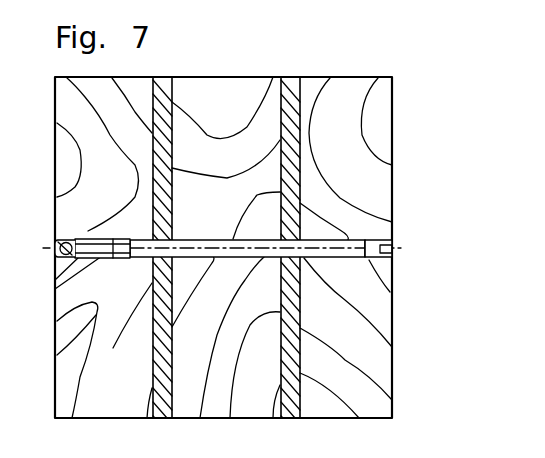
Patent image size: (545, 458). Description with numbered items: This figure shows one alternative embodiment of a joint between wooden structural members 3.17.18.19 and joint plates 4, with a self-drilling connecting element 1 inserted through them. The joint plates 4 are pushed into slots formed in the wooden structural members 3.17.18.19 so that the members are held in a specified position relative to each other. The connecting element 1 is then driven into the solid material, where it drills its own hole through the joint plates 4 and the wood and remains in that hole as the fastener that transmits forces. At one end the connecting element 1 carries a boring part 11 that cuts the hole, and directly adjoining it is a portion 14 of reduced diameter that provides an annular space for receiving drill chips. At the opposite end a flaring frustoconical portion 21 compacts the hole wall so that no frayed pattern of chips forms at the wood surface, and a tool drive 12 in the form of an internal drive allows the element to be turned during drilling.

The wooden structural member 3.17.18.19 is at (314, 93).
The joint plate 4 is at (290, 90).
The connecting element 1 is at (305, 240).
The flaring frustoconical portion 21 is at (373, 242).
The tool drive 12 is at (394, 253).
The portion of reduced diameter 14 is at (55, 289).
The boring part 11 is at (56, 238).